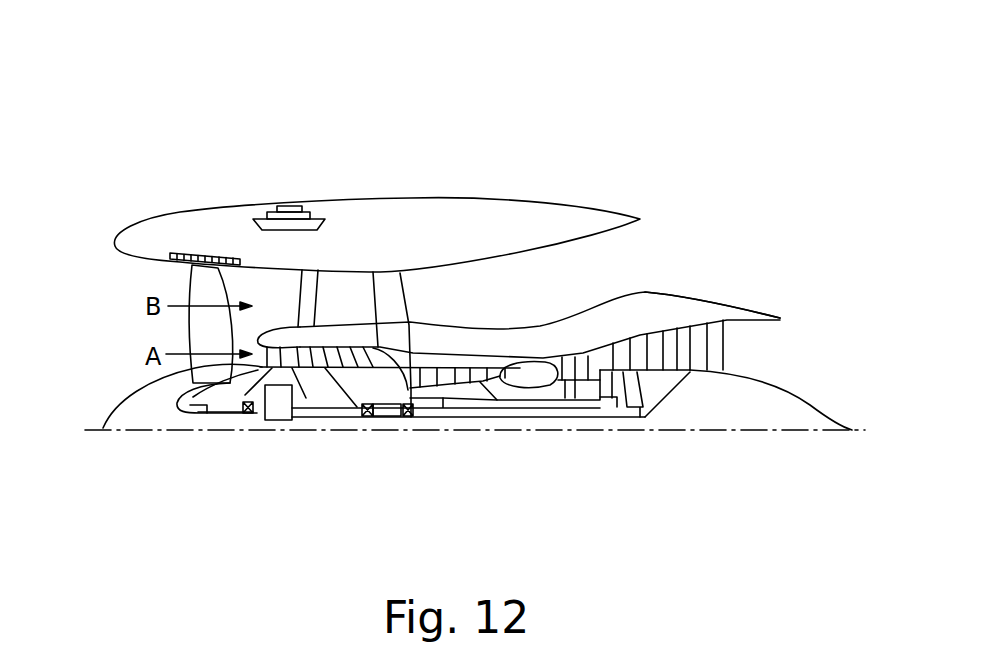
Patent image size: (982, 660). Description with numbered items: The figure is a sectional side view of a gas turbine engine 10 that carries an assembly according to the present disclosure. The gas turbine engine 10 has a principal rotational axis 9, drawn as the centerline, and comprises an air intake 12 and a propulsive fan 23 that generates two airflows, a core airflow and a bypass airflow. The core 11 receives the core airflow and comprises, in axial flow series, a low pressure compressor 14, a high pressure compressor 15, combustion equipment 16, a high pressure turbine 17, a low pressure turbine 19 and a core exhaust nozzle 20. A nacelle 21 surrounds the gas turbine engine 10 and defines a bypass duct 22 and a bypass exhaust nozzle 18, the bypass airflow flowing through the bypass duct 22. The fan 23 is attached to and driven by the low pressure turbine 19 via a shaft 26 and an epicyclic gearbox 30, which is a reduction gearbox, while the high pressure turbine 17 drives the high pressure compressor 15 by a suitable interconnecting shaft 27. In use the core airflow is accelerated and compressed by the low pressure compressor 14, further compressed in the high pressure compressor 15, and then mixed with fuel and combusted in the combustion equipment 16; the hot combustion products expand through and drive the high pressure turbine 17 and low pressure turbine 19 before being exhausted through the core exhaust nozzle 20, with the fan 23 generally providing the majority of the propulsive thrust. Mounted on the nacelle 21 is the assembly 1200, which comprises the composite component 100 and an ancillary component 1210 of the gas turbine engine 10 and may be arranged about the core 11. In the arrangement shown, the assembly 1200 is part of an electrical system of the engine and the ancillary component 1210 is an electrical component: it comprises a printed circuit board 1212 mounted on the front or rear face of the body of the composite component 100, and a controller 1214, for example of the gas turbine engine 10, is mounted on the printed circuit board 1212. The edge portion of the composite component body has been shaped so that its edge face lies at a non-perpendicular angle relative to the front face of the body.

The principal rotational axis 9 is at (757, 432).
The gas turbine engine 10 is at (364, 196).
The core 11 is at (542, 335).
The air intake 12 is at (125, 281).
The low pressure compressor 14 is at (337, 352).
The high pressure compressor 15 is at (463, 375).
The combustion equipment 16 is at (528, 387).
The high pressure turbine 17 is at (582, 357).
The bypass exhaust nozzle 18 is at (732, 251).
The low pressure turbine 19 is at (703, 360).
The core exhaust nozzle 20 is at (792, 356).
The nacelle 21 is at (445, 222).
The bypass duct 22 is at (620, 257).
The propulsive fan 23 is at (190, 342).
The shaft 26 is at (433, 420).
The interconnecting shaft 27 is at (490, 415).
The epicyclic gearbox 30 is at (278, 422).
The composite component 100 is at (258, 222).
The assembly 1200 is at (293, 115).
The ancillary component 1210 is at (311, 134).
The printed circuit board 1212 is at (305, 209).
The controller 1214 is at (290, 205).